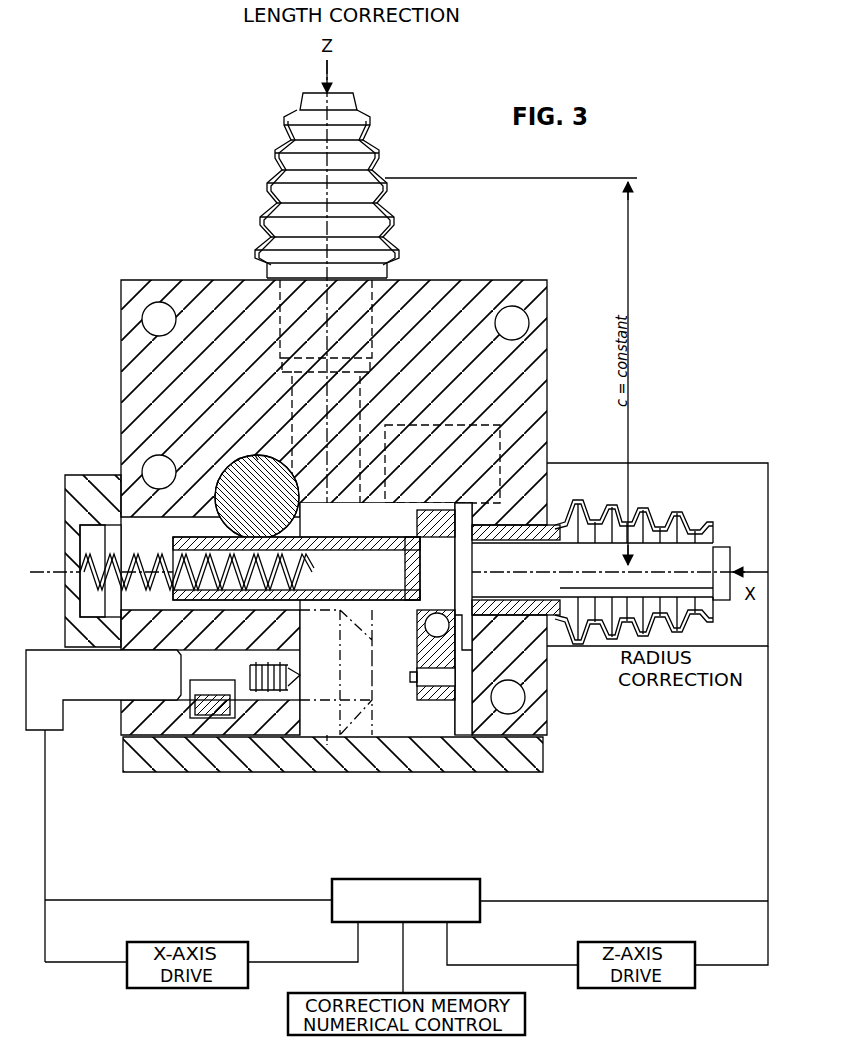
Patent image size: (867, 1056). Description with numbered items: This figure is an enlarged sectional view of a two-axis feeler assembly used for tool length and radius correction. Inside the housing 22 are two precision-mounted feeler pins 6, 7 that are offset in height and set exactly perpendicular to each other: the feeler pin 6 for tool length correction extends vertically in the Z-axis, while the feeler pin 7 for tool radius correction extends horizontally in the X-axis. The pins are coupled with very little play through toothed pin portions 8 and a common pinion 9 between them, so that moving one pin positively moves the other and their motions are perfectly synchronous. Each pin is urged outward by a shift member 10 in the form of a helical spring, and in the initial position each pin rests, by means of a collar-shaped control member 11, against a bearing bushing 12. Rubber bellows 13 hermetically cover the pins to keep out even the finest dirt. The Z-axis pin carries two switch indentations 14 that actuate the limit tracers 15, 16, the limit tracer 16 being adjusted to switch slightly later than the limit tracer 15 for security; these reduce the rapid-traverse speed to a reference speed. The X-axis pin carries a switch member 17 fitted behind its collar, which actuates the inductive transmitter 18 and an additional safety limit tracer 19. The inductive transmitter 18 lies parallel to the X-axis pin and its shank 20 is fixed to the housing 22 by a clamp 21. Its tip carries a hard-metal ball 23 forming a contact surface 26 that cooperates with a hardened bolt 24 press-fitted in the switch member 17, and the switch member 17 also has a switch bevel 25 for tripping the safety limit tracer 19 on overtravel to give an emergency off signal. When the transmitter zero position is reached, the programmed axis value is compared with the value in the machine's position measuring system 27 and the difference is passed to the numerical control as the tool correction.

The feeler pin 6 is at (360, 315).
The feeler pin 7 is at (545, 592).
The toothed pin portions 8 is at (258, 455).
The pinion 9 is at (258, 455).
The shift member 10 is at (70, 477).
The control member 11 is at (478, 530).
The bearing bushing 12 is at (592, 513).
The rubber bellows 13 is at (630, 540).
The switch indentations 14 is at (362, 447).
The limit tracer 15 is at (483, 470).
The limit tracer 16 is at (400, 640).
The switch member 17 is at (495, 700).
The inductive transmitter 18 is at (110, 710).
The safety limit tracer 19 is at (300, 695).
The shank 20 is at (185, 690).
The clamp 21 is at (215, 680).
The housing 22 is at (470, 317).
The hard-metal ball 23 is at (345, 690).
The hardened bolt 24 is at (440, 695).
The switch bevel 25 is at (437, 690).
The contact surface 26 is at (432, 700).
The position measuring system 27 is at (406, 900).